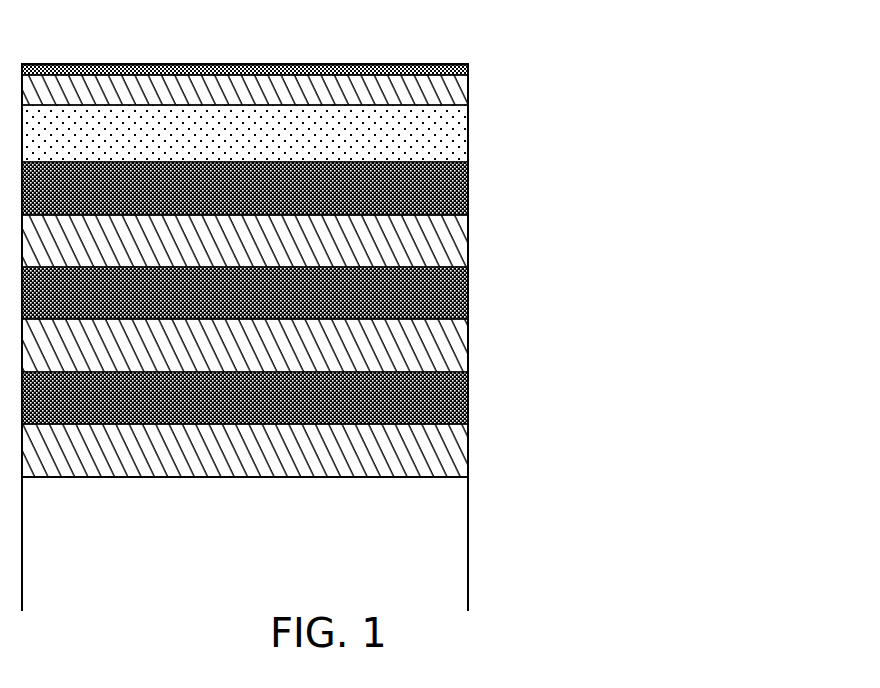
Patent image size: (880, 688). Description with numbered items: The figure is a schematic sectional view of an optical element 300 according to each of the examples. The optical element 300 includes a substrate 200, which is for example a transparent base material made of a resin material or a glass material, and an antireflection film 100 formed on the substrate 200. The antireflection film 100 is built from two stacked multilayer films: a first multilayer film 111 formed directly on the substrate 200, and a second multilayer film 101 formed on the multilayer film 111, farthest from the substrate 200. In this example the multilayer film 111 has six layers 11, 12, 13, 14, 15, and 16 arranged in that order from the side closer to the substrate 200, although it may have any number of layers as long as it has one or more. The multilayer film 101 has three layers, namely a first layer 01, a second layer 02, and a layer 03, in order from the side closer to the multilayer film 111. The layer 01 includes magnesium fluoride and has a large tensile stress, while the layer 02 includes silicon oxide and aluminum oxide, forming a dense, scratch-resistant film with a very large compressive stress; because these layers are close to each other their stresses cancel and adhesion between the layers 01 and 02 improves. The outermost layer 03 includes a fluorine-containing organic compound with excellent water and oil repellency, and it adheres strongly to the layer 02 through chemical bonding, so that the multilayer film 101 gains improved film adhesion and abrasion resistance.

The optical element 300 is at (414, 305).
The antireflection film 100 is at (414, 276).
The multilayer film (second film) 101 is at (361, 124).
The multilayer film (first film) 111 is at (361, 327).
The layer 03 is at (468, 68).
The layer (second layer) 02 is at (468, 98).
The layer (first layer) 01 is at (294, 145).
The layer 16 is at (470, 195).
The layer 15 is at (453, 252).
The layer 14 is at (470, 303).
The layer 13 is at (453, 355).
The layer 12 is at (470, 405).
The layer 11 is at (294, 458).
The substrate (base material) 200 is at (448, 550).